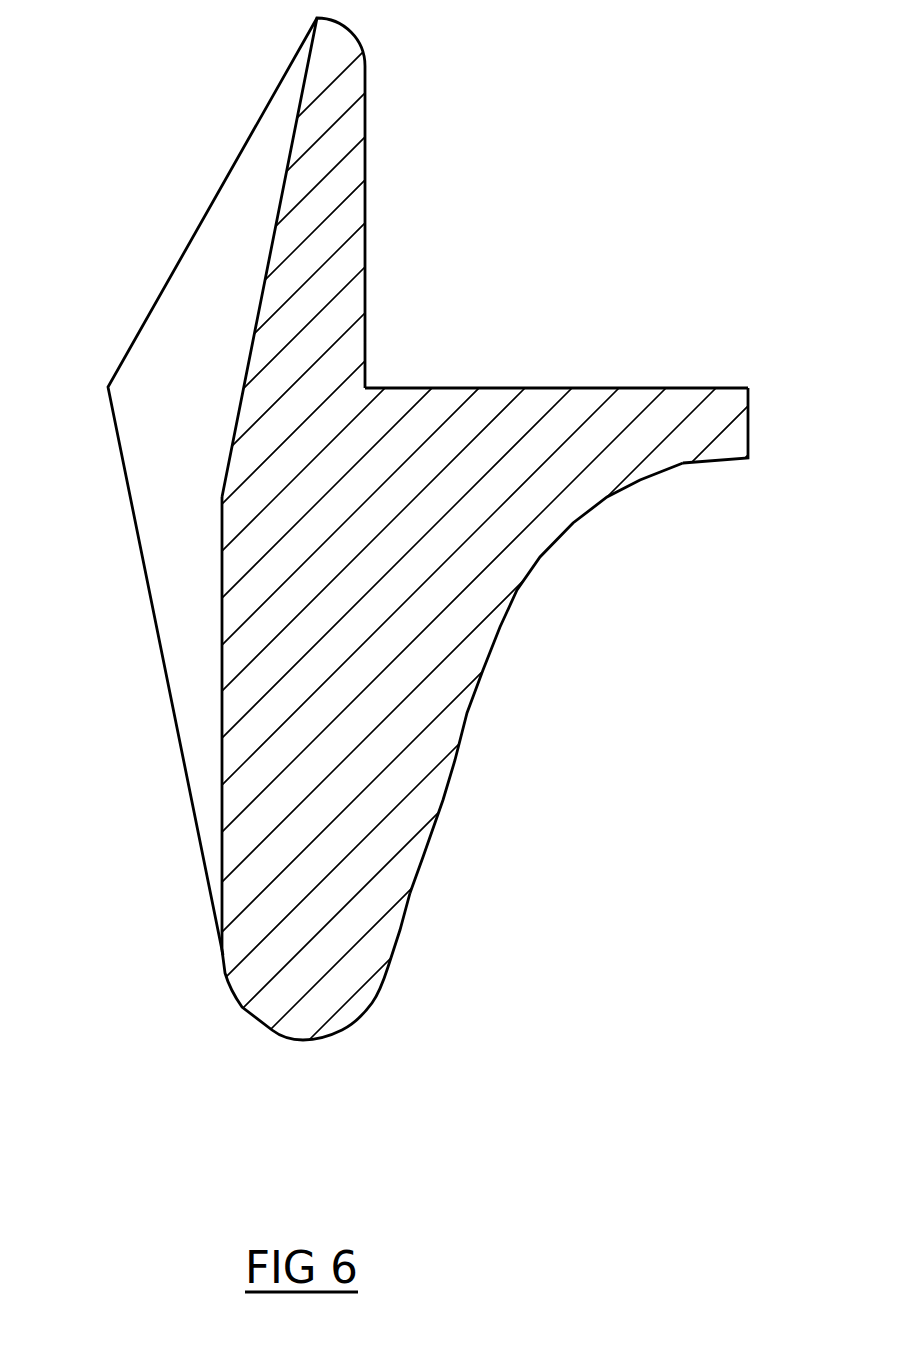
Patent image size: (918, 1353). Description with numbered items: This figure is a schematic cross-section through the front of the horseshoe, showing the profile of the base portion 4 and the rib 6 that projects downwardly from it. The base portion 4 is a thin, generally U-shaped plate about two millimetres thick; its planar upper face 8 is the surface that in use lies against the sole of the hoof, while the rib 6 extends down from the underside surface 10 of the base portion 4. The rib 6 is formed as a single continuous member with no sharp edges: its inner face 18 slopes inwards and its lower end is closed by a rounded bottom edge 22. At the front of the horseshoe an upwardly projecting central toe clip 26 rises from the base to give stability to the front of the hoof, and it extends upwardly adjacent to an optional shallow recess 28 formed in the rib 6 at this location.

The base portion 4 is at (706, 357).
The rib 6 is at (250, 871).
The planar upper face 8 is at (535, 388).
The underside surface 10 is at (728, 462).
The inner face 18 is at (443, 800).
The bottom edge 22 is at (304, 1042).
The toe clip 26 is at (330, 157).
The shallow recess 28 is at (170, 598).